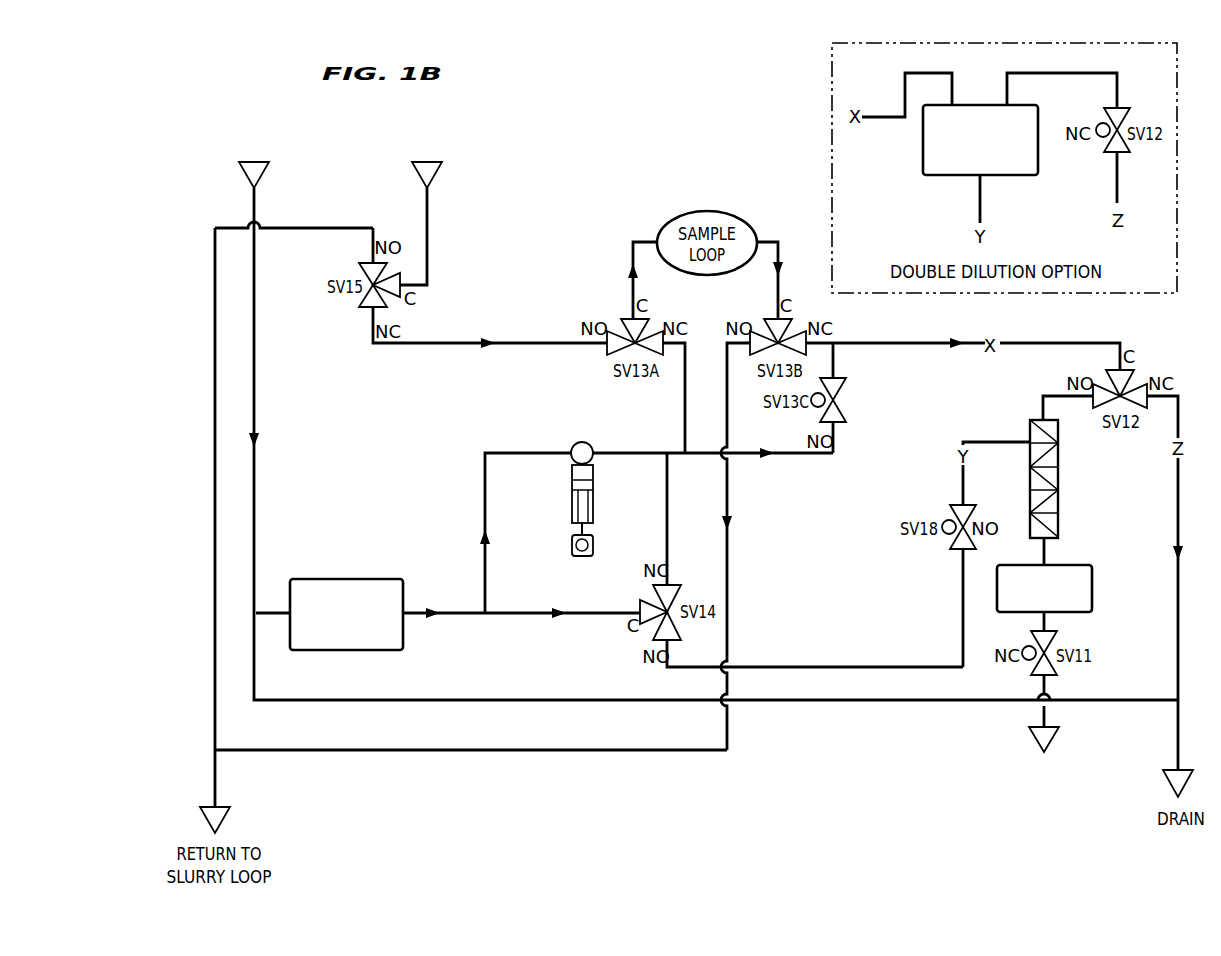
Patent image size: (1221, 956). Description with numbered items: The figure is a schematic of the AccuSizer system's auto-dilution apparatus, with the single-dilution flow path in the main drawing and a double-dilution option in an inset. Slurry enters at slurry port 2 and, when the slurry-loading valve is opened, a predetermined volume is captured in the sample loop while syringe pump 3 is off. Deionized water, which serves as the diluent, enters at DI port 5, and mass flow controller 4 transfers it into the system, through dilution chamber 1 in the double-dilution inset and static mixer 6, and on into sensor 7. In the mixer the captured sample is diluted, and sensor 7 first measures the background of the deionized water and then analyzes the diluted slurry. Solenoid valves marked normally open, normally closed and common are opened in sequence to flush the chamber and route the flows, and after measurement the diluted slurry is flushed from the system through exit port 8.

The dilution chamber 1 is at (923, 135).
The slurry port 2 is at (421, 177).
The syringe pump 3 is at (593, 500).
The mass flow controller 4 is at (345, 578).
The DI port 5 is at (248, 177).
The static mixer 6 is at (1058, 510).
The sensor 7 is at (1092, 603).
The exit port 8 is at (1033, 735).